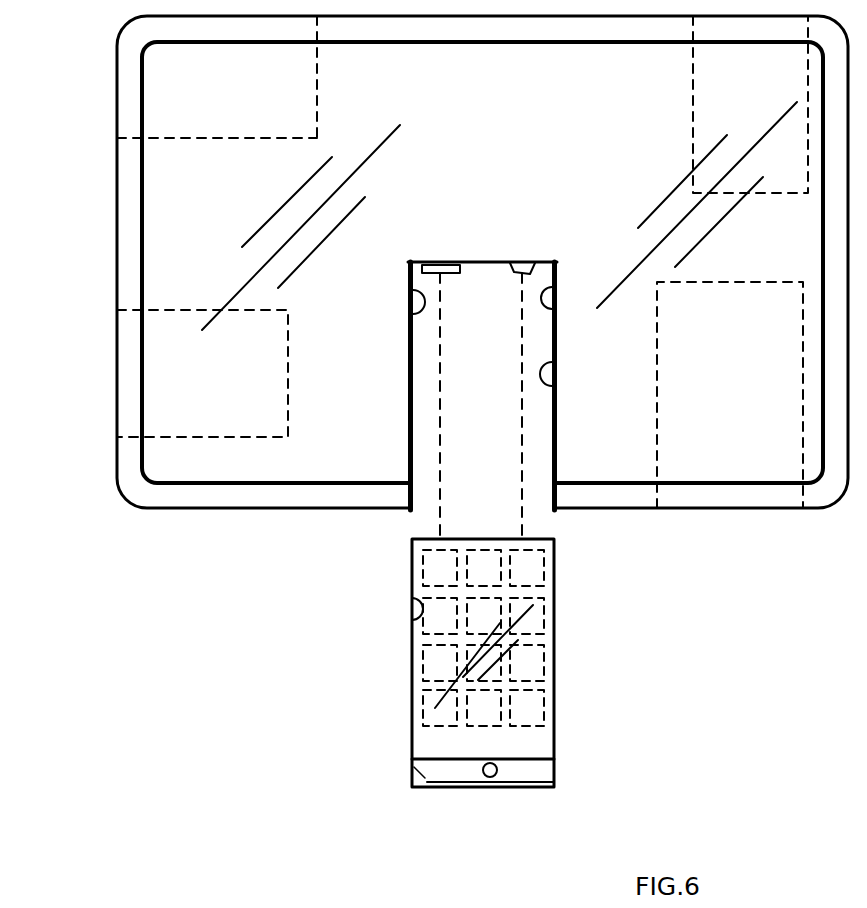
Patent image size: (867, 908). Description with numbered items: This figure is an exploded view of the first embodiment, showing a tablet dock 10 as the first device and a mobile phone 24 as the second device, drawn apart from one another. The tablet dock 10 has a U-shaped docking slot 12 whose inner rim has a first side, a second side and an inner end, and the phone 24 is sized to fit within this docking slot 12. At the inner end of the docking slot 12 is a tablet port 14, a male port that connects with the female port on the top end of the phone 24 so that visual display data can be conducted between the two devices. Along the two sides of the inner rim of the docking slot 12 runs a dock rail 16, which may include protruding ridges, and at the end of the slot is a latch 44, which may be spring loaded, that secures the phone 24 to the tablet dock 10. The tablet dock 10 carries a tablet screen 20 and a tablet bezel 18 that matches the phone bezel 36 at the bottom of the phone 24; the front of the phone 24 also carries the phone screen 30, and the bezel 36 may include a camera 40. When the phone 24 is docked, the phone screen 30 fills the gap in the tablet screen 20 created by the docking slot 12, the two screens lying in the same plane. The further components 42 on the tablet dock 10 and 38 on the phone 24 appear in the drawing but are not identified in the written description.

The tablet dock 10 is at (444, 274).
The docking slot 12 is at (557, 356).
The tablet port 14 is at (443, 262).
The dock rail 16 is at (412, 313).
The tablet bezel 18 is at (130, 343).
The tablet screen 20 is at (605, 125).
The mobile phone 24 is at (501, 679).
The phone screen 30 is at (418, 600).
The phone bezel 36 is at (412, 768).
The contact pads 38 is at (558, 711).
The camera 40 is at (485, 760).
The magnets 42 is at (317, 115).
The latch 44 is at (525, 266).